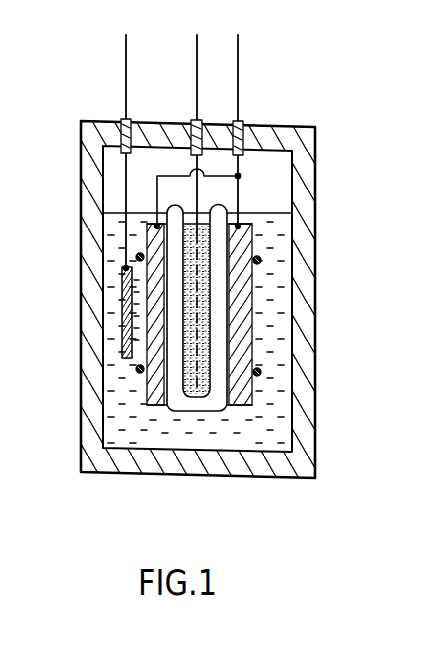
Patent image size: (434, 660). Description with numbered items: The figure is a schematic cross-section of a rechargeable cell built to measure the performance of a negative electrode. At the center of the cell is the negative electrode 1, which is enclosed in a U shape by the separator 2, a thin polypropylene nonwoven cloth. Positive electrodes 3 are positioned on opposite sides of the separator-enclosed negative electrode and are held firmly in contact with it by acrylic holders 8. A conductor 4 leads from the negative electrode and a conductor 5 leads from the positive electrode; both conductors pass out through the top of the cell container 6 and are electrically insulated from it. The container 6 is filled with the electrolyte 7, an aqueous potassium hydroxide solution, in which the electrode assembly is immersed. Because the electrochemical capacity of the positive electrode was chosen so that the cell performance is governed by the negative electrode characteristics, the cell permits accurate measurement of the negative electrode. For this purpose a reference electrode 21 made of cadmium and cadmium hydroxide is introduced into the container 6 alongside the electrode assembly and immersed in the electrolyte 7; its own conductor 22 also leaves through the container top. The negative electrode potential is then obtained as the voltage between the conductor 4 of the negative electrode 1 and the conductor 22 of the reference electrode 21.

The negative electrode 1 is at (188, 325).
The separator 2 is at (220, 353).
The positive electrode 3 is at (252, 398).
The conductor of negative electrode 4 is at (195, 94).
The conductor of positive electrode 5 is at (242, 90).
The cell container 6 is at (293, 453).
The electrolyte 7 is at (234, 433).
The acrylic holder 8 is at (140, 372).
The reference electrode 21 is at (128, 306).
The conductor 22 is at (124, 70).